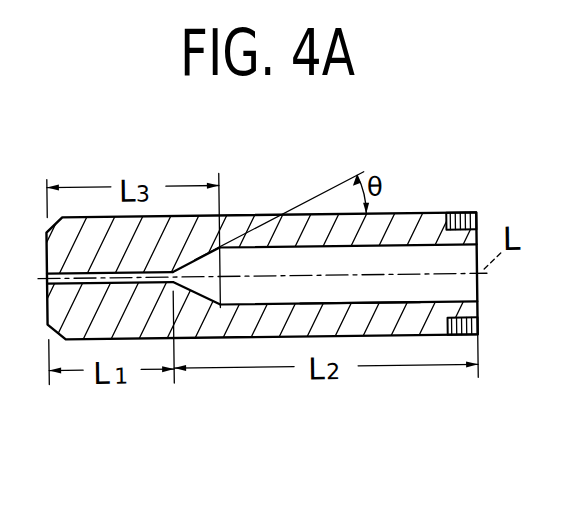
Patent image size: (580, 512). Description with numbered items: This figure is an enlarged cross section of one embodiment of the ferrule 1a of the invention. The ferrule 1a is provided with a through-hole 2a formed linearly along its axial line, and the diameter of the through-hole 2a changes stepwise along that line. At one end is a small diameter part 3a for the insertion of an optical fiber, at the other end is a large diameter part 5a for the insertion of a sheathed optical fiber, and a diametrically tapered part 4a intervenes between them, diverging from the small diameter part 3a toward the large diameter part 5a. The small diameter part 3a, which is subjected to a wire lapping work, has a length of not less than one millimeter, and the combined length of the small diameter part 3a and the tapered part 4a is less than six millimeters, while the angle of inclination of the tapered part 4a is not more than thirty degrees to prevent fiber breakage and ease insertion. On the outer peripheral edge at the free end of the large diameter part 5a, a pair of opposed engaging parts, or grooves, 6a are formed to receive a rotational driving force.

The ferrule 1a is at (400, 198).
The through-hole 2a is at (470, 289).
The small diameter part 3a is at (110, 271).
The diametrically tapered part 4a is at (176, 283).
The large diameter part 5a is at (383, 306).
The engaging parts (grooves) 6a is at (460, 213).